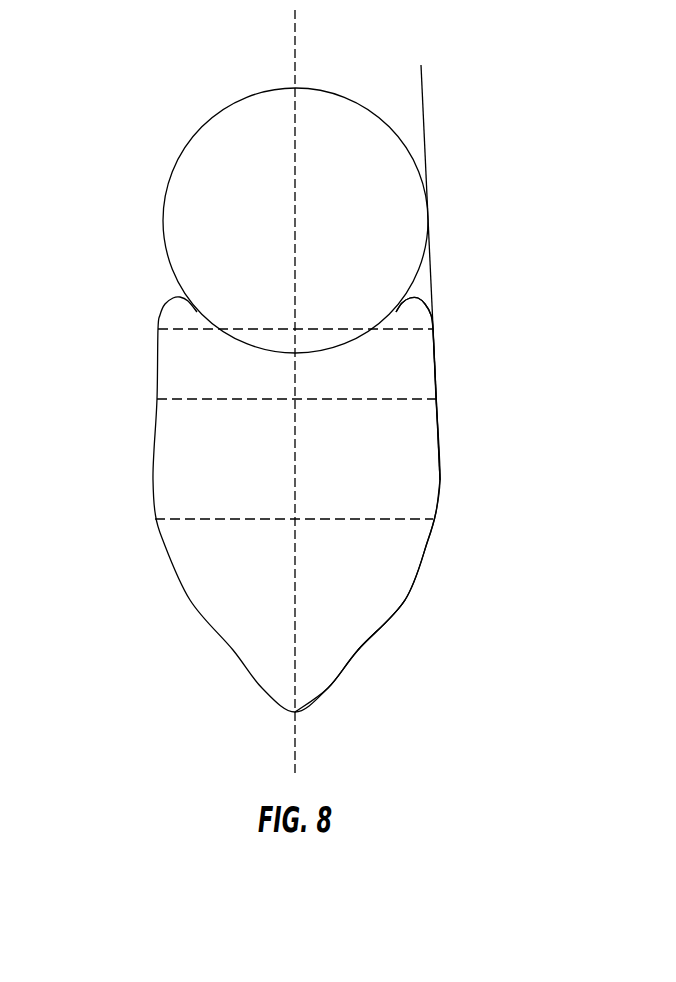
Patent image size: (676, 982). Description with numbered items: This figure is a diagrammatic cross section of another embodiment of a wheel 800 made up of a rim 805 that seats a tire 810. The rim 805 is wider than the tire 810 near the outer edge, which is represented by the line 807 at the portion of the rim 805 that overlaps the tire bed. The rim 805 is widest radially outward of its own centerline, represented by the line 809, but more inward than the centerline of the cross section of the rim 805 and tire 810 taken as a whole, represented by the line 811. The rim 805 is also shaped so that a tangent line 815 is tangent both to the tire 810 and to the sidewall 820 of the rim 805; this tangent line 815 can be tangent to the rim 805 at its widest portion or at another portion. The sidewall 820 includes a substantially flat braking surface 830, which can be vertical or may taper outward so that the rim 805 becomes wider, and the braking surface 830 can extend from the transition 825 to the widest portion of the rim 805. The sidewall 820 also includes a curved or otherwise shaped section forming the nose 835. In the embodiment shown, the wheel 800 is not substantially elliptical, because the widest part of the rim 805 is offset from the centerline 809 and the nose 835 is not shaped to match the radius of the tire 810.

The wheel 800 is at (139, 36).
The rim 805 is at (210, 612).
The line representing the outer edge 807 is at (417, 330).
The centerline of rim 809 is at (423, 520).
The tire 810 is at (190, 157).
The centerline of the cross section of rim and tire as a whole 811 is at (177, 400).
The tangent line 815 is at (422, 103).
The sidewall 820 is at (403, 607).
The transition 825 is at (422, 297).
The braking surface 830 is at (435, 393).
The nose 835 is at (380, 648).